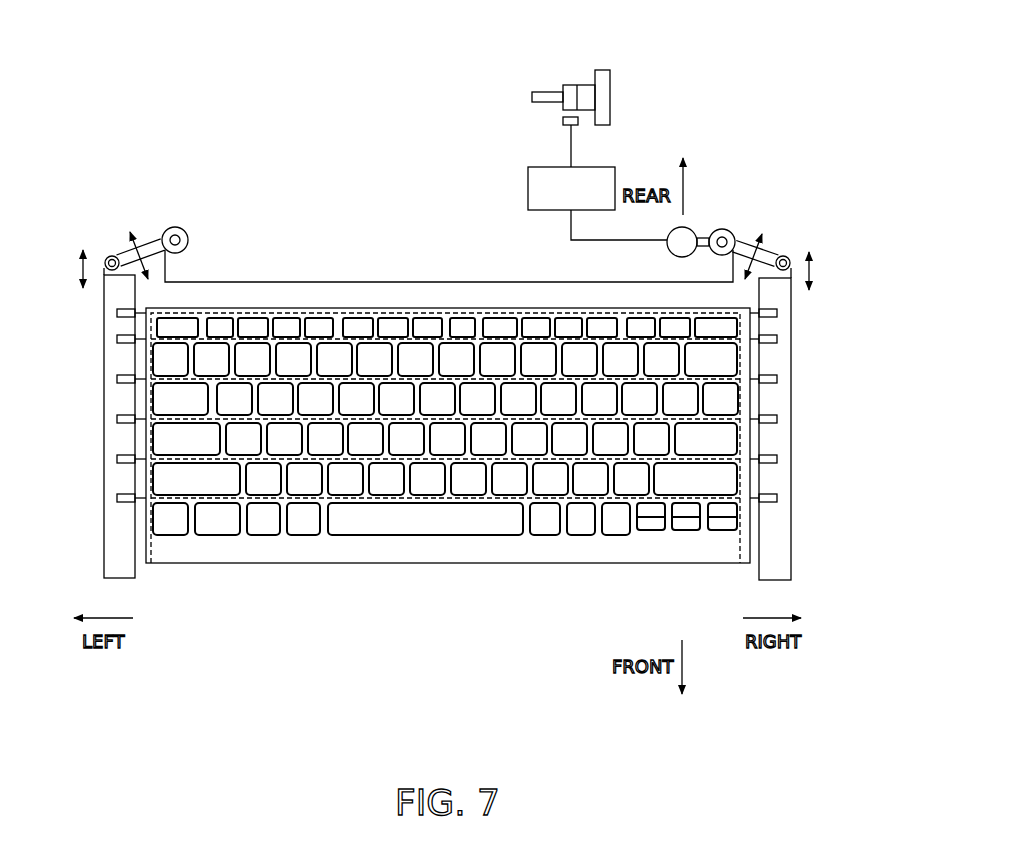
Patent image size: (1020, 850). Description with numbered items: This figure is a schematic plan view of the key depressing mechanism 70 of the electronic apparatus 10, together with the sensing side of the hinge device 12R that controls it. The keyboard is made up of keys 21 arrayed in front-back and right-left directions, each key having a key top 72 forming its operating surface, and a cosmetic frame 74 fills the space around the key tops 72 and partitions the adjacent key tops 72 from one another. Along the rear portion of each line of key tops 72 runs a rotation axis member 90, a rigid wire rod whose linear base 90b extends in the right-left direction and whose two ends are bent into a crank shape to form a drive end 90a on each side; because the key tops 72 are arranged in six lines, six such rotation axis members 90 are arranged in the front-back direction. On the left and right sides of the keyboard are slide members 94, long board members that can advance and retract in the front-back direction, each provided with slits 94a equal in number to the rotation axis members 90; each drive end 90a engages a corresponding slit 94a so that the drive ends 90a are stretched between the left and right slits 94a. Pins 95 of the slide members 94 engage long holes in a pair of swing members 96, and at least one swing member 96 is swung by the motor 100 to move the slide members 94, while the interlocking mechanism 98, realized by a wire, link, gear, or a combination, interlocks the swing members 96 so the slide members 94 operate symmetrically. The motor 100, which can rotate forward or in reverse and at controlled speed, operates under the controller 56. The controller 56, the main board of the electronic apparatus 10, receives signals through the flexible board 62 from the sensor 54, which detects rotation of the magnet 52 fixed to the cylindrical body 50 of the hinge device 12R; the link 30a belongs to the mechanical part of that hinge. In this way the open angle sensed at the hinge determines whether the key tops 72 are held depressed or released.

The electronic apparatus 10 is at (803, 74).
The hinge device 12R is at (492, 75).
The keys 21 is at (578, 357).
The link 30a is at (610, 95).
The cylindrical body 50 is at (548, 91).
The magnet 52 is at (572, 84).
The sensor 54 is at (562, 121).
The controller 56 is at (534, 190).
The flexible board 62 is at (570, 157).
The key depressing mechanism 70 is at (785, 159).
The key top 72 is at (622, 353).
The frame 74 is at (503, 564).
The rotation axis member 90 is at (390, 463).
The drive end 90a is at (117, 338).
The base 90b is at (447, 430).
The slide members 94 is at (118, 556).
The slits 94a is at (117, 378).
The pins 95 is at (111, 257).
The swing members 96 is at (168, 229).
The interlocking mechanism 98 is at (243, 281).
The motor 100 is at (691, 231).